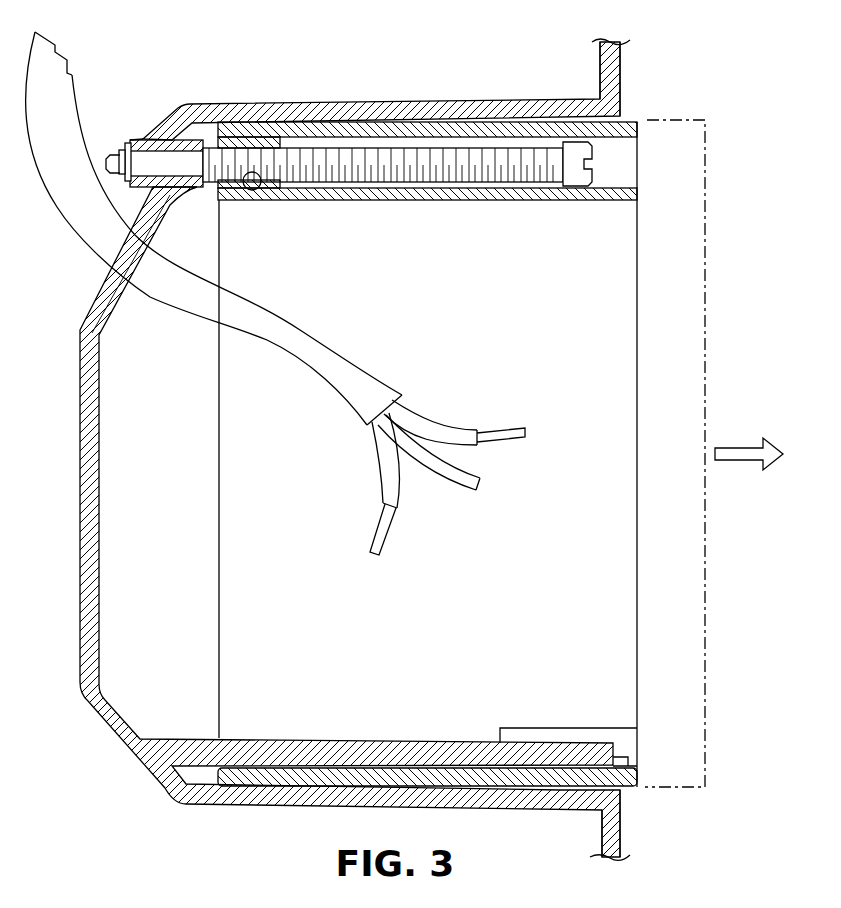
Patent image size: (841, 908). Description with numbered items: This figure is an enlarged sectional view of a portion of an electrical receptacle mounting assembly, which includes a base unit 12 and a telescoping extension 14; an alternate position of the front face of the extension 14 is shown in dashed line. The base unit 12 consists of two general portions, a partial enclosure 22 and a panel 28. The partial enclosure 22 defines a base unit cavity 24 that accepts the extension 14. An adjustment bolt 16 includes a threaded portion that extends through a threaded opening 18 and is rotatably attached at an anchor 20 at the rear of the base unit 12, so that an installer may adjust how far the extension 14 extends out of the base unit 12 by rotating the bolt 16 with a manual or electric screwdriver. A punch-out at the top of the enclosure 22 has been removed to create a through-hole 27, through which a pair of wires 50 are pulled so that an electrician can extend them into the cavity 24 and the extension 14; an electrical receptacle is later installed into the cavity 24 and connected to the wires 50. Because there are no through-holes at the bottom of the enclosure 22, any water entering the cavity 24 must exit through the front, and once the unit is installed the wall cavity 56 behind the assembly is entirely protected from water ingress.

The base unit 12 is at (397, 96).
The telescoping extension 14 is at (637, 277).
The adjustment bolt 16 is at (459, 200).
The threaded opening 18 is at (253, 190).
The anchor 20 is at (126, 146).
The partial enclosure 22 is at (80, 425).
The base unit cavity 24 is at (149, 487).
The through-hole 27 is at (102, 296).
The panel 28 is at (623, 78).
The wires 50 is at (285, 298).
The wall cavity 56 is at (29, 487).